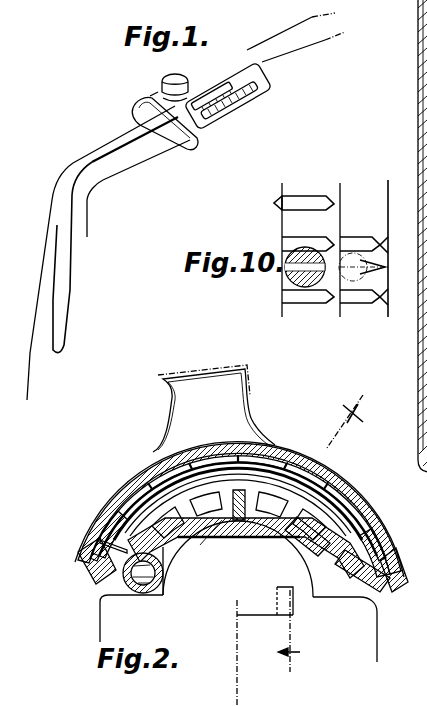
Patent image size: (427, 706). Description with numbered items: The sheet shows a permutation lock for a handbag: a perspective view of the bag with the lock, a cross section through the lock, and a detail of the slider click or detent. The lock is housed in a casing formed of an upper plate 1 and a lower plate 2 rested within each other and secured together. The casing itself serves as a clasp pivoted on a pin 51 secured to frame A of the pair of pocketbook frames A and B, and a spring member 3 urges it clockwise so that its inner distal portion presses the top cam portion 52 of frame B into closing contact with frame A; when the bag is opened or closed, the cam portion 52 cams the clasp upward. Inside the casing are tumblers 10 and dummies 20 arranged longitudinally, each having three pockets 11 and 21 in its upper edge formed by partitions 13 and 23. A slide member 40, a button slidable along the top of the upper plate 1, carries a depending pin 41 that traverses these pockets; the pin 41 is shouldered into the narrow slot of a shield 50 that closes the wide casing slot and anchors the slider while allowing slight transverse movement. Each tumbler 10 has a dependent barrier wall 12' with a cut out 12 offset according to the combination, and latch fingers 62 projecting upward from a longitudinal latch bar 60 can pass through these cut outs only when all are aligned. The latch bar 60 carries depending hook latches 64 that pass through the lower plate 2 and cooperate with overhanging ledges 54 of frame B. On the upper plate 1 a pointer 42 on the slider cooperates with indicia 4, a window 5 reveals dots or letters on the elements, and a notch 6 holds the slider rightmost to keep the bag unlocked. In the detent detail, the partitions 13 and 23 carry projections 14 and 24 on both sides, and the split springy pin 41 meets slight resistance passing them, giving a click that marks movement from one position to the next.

In FIG. 1, the upper plate 1 is at (184, 130).
In FIG. 2, the upper plate 1 is at (100, 517).
In FIG. 2, the lower plate 2 is at (98, 535).
In FIG. 2, the spring member 3 is at (92, 558).
In FIG. 1, the indicia 4 is at (275, 62).
In FIG. 1, the window 5 is at (248, 98).
In FIG. 1, the notch 6 is at (216, 68).
In FIG. 2, the notch 6 is at (328, 533).
In FIG. 10, the tumbler 10 is at (306, 312).
In FIG. 2, the tumbler 10 is at (135, 516).
In FIG. 10, the tumbler pocket 11 is at (276, 200).
In FIG. 2, the tumbler pocket 11 is at (160, 482).
In FIG. 2, the cut out 12 is at (239, 512).
In FIG. 2, the barrier wall 12' is at (172, 500).
In FIG. 10, the partition 13 is at (290, 240).
In FIG. 10, the projection 14 is at (328, 243).
In FIG. 10, the dummy 20 is at (370, 316).
In FIG. 10, the dummy pocket 21 is at (388, 250).
In FIG. 10, the partition 23 is at (374, 271).
In FIG. 10, the projection 24 is at (384, 240).
In FIG. 1, the slide member 40 is at (176, 78).
In FIG. 2, the slide member 40 is at (252, 398).
In FIG. 10, the pin 41 is at (290, 262).
In FIG. 2, the pin 41 is at (218, 455).
In FIG. 1, the pointer 42 is at (160, 92).
In FIG. 2, the shield 50 is at (318, 470).
In FIG. 2, the pin 51 is at (165, 578).
In FIG. 2, the cam portion 52 is at (346, 553).
In FIG. 2, the overhanging ledge 54 is at (302, 583).
In FIG. 2, the latch bar 60 is at (272, 548).
In FIG. 2, the latch finger 62 is at (238, 540).
In FIG. 2, the hook latch 64 is at (262, 560).
In FIG. 1, the frame A is at (90, 162).
In FIG. 2, the frame A is at (108, 610).
In FIG. 1, the frame B is at (100, 170).
In FIG. 2, the frame B is at (365, 633).